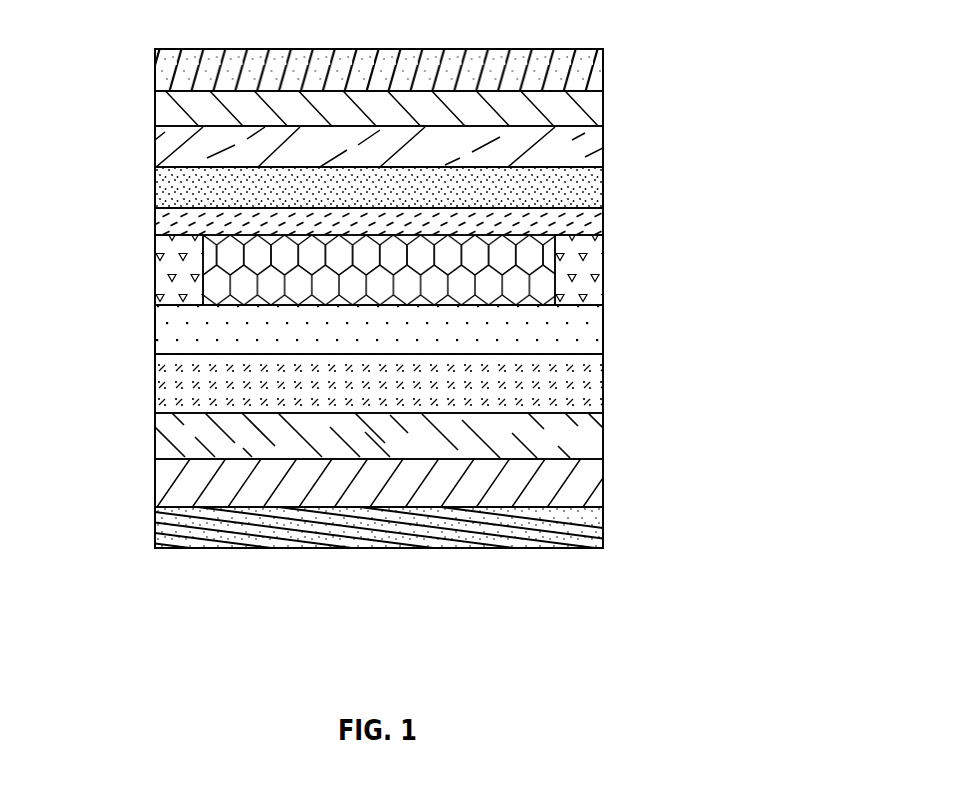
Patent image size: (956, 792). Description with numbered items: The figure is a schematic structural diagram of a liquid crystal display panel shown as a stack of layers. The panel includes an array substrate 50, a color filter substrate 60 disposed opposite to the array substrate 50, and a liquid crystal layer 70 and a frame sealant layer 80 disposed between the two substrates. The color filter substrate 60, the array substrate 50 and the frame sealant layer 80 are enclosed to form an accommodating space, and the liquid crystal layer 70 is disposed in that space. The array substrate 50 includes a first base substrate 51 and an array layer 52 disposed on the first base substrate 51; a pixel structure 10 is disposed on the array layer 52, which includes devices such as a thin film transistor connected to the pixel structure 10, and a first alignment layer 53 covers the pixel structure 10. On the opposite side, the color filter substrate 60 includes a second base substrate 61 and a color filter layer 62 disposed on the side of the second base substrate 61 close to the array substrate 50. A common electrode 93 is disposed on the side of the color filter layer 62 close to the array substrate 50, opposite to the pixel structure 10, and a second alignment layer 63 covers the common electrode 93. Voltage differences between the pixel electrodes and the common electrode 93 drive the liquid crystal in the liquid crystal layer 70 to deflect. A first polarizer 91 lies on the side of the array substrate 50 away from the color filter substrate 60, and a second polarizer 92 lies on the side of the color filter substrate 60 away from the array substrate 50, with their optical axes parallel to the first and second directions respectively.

The pixel structure 10 is at (565, 384).
The array substrate 50 is at (133, 432).
The first base substrate 51 is at (587, 485).
The array layer 52 is at (588, 440).
The first alignment layer 53 is at (562, 318).
The color filter substrate 60 is at (140, 155).
The second base substrate 61 is at (585, 110).
The color filter layer 62 is at (587, 152).
The second alignment layer 63 is at (580, 218).
The liquid crystal layer 70 is at (425, 262).
The frame sealant layer 80 is at (570, 273).
The first polarizer 91 is at (580, 535).
The second polarizer 92 is at (570, 62).
The common electrode 93 is at (565, 172).